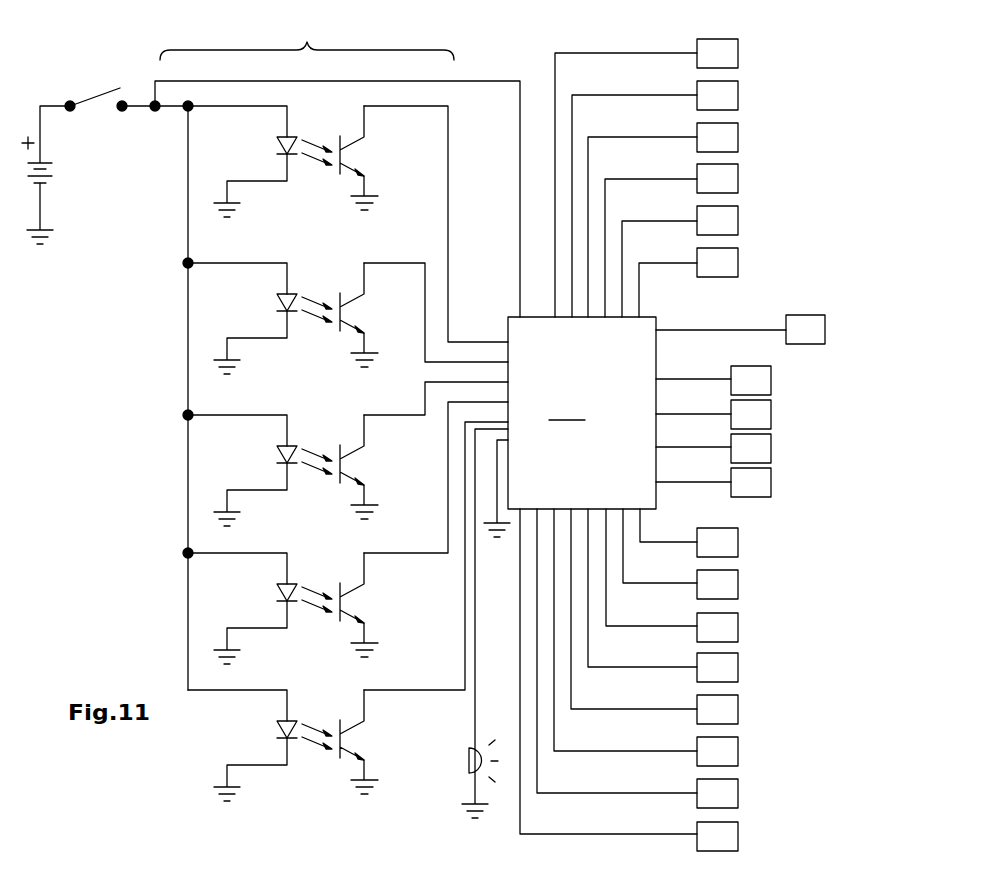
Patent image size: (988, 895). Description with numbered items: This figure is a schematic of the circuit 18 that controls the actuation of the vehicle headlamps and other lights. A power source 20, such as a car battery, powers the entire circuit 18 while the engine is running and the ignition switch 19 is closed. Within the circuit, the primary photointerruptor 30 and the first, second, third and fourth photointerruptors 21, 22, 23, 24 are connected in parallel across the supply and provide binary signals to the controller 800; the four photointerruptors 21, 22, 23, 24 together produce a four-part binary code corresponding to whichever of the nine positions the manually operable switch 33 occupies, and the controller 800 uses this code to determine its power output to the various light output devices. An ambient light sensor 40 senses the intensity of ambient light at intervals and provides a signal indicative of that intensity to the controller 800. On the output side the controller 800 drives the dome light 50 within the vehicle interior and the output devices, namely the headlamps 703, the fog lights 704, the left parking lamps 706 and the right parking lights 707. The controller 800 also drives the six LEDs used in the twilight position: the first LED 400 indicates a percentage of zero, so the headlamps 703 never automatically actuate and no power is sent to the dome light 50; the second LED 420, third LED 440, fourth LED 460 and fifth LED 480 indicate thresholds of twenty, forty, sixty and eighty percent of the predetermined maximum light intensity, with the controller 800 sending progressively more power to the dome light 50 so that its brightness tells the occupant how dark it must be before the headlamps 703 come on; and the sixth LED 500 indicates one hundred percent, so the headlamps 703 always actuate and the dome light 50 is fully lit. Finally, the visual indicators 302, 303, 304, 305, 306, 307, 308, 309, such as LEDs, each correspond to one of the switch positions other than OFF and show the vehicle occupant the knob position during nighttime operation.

The circuit 18 is at (838, 68).
The ignition switch 19 is at (98, 96).
The power source 20 is at (43, 186).
The manually operable switch 33 is at (307, 37).
The primary photointerruptor 30 is at (348, 224).
The first photointerruptor 21 is at (348, 318).
The second photointerruptor 22 is at (348, 454).
The third photointerruptor 23 is at (348, 533).
The fourth photointerruptor 24 is at (348, 611).
The controller 800 is at (570, 427).
The ambient light sensor 40 is at (468, 752).
The dome light 50 is at (826, 328).
The sixth LED 500 is at (739, 56).
The fifth LED 480 is at (739, 102).
The fourth LED 460 is at (739, 144).
The third LED 440 is at (739, 186).
The second LED 420 is at (739, 228).
The first LED 400 is at (739, 268).
The headlamps 703 is at (772, 371).
The fog lights 704 is at (772, 412).
The left parking lamps 706 is at (772, 446).
The right parking lights 707 is at (772, 483).
The visual indicator 302 is at (739, 535).
The visual indicator 303 is at (739, 584).
The visual indicator 304 is at (739, 624).
The visual indicator 305 is at (739, 675).
The visual indicator 306 is at (739, 712).
The visual indicator 307 is at (739, 750).
The visual indicator 308 is at (739, 794).
The visual indicator 309 is at (739, 834).